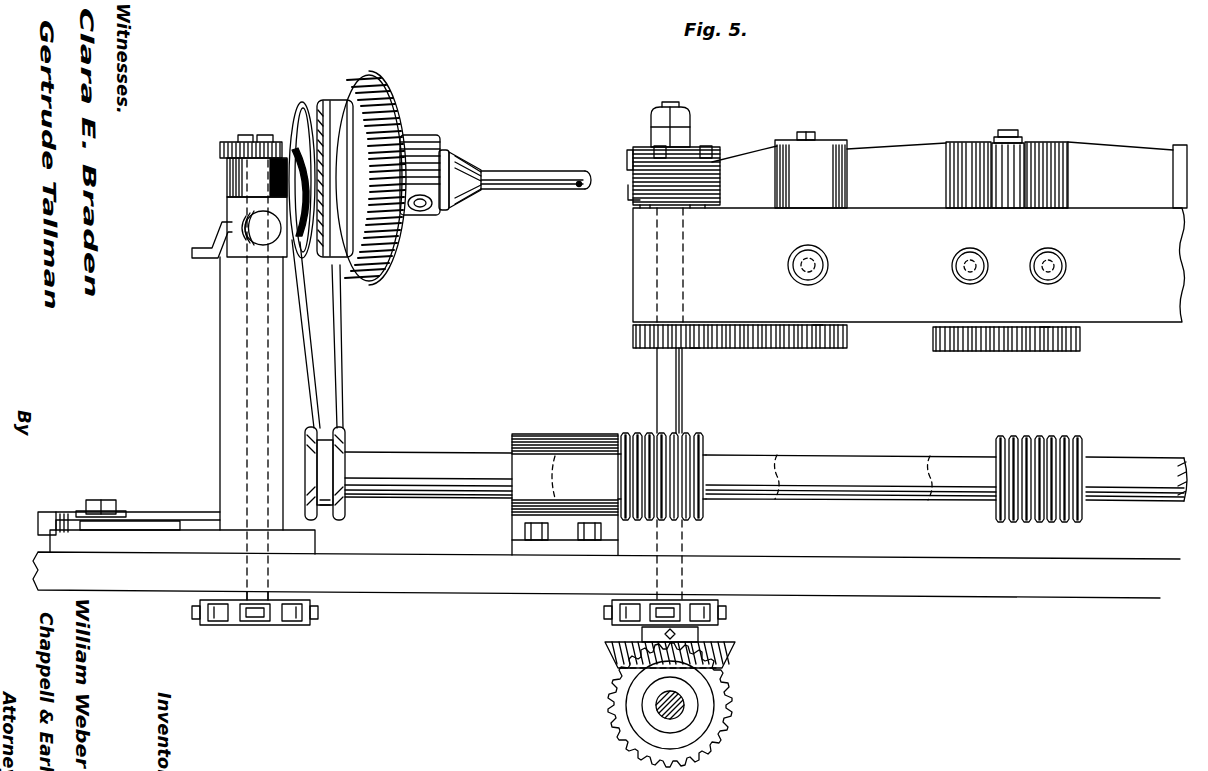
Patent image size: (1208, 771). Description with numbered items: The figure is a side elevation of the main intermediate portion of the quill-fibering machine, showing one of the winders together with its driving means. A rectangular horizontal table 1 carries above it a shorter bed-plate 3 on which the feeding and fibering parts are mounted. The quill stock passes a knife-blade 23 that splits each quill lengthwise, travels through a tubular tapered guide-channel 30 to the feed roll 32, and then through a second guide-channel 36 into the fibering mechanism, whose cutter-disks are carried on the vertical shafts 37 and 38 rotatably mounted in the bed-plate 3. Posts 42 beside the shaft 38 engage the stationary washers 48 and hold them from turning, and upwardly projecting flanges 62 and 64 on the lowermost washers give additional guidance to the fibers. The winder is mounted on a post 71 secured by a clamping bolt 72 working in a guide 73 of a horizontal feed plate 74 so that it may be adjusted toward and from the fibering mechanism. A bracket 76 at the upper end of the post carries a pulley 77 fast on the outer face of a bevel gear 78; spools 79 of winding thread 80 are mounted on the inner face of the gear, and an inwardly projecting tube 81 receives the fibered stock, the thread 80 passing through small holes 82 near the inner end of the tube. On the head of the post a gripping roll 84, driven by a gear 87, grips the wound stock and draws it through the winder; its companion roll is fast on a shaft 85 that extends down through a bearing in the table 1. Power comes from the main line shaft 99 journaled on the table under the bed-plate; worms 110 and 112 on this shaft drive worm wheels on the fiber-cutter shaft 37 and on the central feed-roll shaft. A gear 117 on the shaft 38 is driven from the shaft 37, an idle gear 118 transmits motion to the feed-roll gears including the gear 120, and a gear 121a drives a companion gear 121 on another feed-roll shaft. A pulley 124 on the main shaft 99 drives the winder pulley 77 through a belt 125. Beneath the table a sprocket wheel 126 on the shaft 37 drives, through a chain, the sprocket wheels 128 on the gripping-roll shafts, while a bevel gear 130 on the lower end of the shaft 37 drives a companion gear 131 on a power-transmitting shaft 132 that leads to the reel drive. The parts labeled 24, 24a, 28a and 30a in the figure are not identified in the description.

The table 1 is at (606, 575).
The bed-plate 3 is at (633, 237).
The knife-blade 23 is at (1023, 133).
The bearing sleeve 24 is at (968, 150).
The bearing sleeve 24a is at (1043, 150).
The opening 28a is at (954, 281).
The tubular tapered guide-channel 30 is at (859, 158).
The rod 30a is at (1155, 140).
The feed roll 32 is at (795, 150).
The tubular tapered guide-channel 36 is at (745, 162).
The vertical shaft 37 is at (662, 380).
The vertical shaft 38 is at (670, 113).
The posts 42 is at (703, 150).
The washers 48 is at (704, 208).
The flange 62 is at (628, 182).
The flange 64 is at (631, 168).
The post 71 is at (227, 360).
The clamping bolt 72 is at (95, 500).
The guide 73 is at (141, 527).
The horizontal feed plate 74 is at (182, 542).
The bracket 76 is at (298, 168).
The pulley 77 is at (301, 108).
The bevel gear 78 is at (352, 82).
The spools 79 is at (413, 137).
The winding thread 80 is at (430, 190).
The tube 81 is at (516, 180).
The small holes 82 is at (580, 180).
The gripping roll 84 is at (238, 182).
The shaft 85 is at (247, 408).
The gear 87 is at (220, 148).
The main line shaft 99 is at (740, 460).
The worm 110 is at (708, 515).
The worm 112 is at (994, 517).
The gear 117 is at (632, 335).
The idle gear 118 is at (694, 349).
The gear 120 is at (817, 318).
The gear 121 is at (967, 319).
The gear 121a is at (1047, 319).
The pulley 124 is at (345, 434).
The belt 125 is at (335, 358).
The sprocket wheel 126 is at (607, 613).
The sprocket wheels 128 is at (318, 617).
The bevel gear 130 is at (732, 655).
The gear 131 is at (733, 697).
The power-transmitting shaft 132 is at (653, 707).